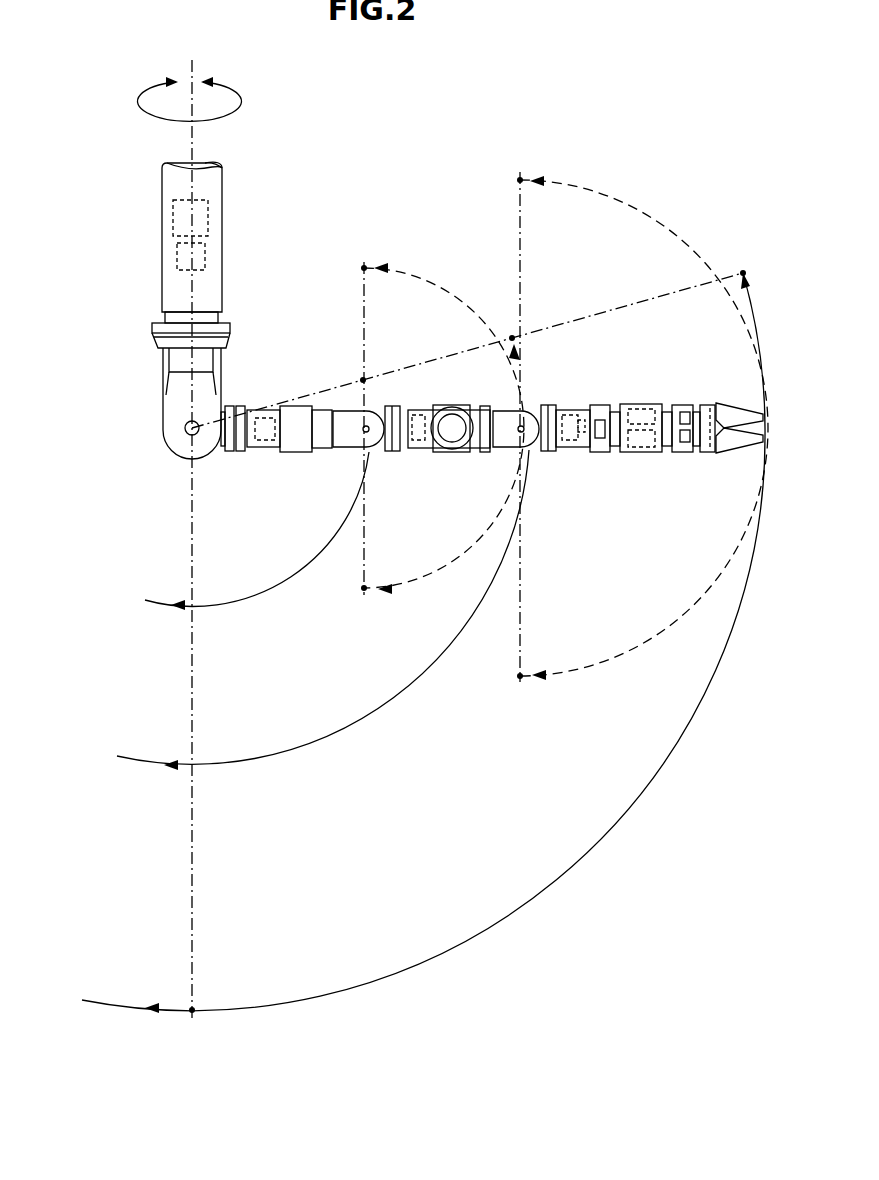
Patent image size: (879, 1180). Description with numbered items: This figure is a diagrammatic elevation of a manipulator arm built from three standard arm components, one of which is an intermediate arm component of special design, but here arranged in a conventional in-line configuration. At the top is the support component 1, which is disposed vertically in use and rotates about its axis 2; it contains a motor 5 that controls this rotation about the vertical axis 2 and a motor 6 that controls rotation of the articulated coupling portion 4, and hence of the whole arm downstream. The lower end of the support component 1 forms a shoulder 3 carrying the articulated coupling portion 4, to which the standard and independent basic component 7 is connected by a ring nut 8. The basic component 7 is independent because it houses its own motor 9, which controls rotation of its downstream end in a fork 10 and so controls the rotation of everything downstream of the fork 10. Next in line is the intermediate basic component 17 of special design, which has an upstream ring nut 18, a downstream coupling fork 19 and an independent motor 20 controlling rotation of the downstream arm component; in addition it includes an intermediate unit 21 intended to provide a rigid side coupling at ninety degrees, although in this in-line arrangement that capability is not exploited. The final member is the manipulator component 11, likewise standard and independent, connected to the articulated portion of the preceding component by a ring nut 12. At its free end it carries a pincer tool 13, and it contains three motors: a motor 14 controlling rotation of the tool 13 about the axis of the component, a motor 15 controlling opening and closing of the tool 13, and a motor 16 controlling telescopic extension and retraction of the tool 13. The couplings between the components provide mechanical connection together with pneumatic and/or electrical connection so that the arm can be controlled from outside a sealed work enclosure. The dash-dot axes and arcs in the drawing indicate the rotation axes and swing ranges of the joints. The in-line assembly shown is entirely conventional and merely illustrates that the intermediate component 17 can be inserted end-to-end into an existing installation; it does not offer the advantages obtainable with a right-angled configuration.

The support component 1 is at (150, 297).
The axis 2 is at (186, 130).
The shoulder 3 is at (184, 446).
The articulated coupling portion 4 is at (223, 446).
The motor 5 is at (173, 218).
The motor 6 is at (177, 256).
The basic component 7 is at (291, 460).
The ring nut 8 is at (237, 406).
The motor 9 is at (265, 418).
The fork 10 is at (352, 434).
The manipulator component 11 is at (627, 465).
The ring nut 12 is at (548, 405).
The pincer tool 13 is at (738, 450).
The motor 14 is at (575, 450).
The motor 15 is at (636, 404).
The motor 16 is at (645, 452).
The intermediate basic component 17 is at (471, 460).
The upstream ring nut 18 is at (395, 406).
The downstream coupling fork 19 is at (508, 434).
The motor 20 is at (418, 413).
The intermediate unit 21 is at (437, 451).